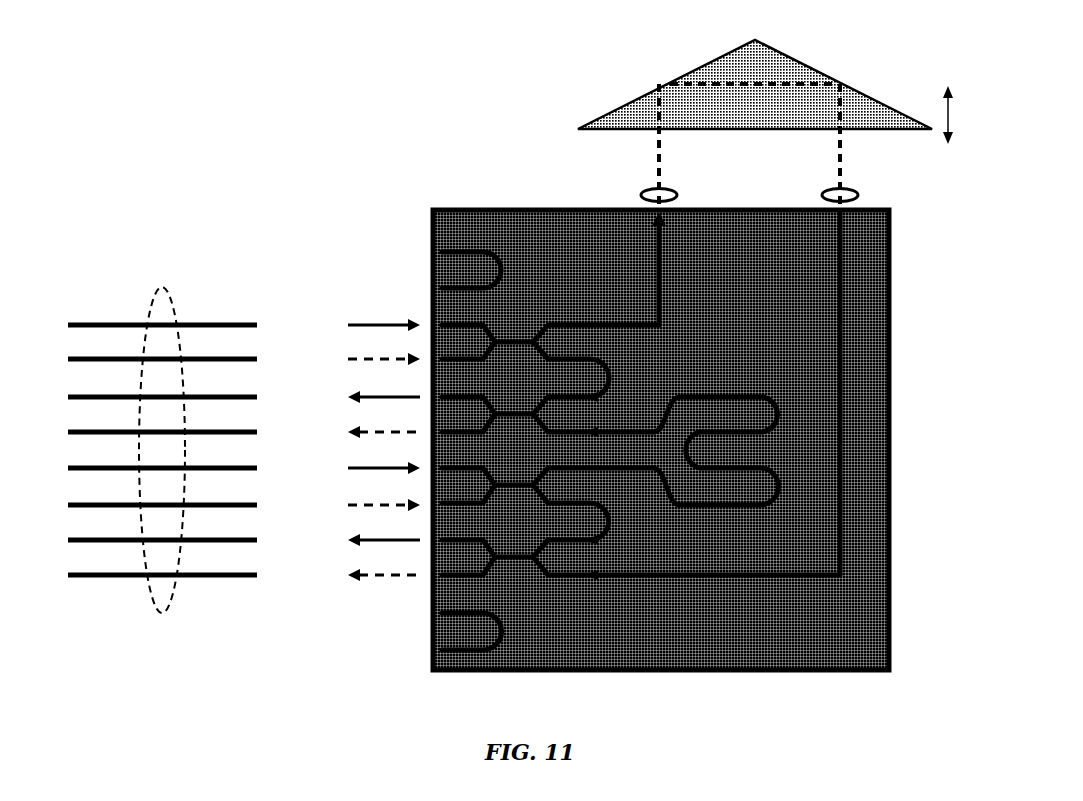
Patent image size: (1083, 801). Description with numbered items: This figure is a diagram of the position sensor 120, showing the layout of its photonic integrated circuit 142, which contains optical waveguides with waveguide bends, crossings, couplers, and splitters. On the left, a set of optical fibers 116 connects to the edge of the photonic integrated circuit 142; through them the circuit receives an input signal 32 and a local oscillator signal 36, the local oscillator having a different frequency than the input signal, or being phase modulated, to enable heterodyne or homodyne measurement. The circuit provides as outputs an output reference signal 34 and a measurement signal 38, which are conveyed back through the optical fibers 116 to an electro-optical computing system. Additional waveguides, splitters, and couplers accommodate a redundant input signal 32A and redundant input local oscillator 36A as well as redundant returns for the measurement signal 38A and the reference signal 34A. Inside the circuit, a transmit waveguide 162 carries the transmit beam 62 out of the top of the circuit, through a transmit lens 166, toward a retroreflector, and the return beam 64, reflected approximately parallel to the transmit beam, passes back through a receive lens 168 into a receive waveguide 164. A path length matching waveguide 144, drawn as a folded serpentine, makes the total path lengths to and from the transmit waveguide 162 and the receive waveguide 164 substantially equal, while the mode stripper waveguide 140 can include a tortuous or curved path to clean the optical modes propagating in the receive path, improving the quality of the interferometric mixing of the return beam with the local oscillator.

The input signal 32 is at (356, 332).
The redundant input signal 32A is at (357, 362).
The output reference signal 34 is at (356, 400).
The redundant reference signal 34A is at (357, 435).
The local oscillator signal 36 is at (356, 471).
The redundant input local oscillator 36A is at (355, 508).
The measurement signal 38 is at (356, 543).
The redundant measurement signal 38A is at (351, 578).
The transmit beam 62 is at (664, 142).
The return beam 64 is at (836, 140).
The optical fibers 116 is at (162, 435).
The position sensor 120 is at (857, 107).
The mode stripper waveguide 140 is at (842, 442).
The photonic integrated circuit 142 is at (862, 628).
The path length matching waveguide 144 is at (748, 395).
The transmit waveguide 162 is at (662, 273).
The receive waveguide 164 is at (837, 307).
The transmit lens 166 is at (641, 195).
The receive lens 168 is at (860, 195).